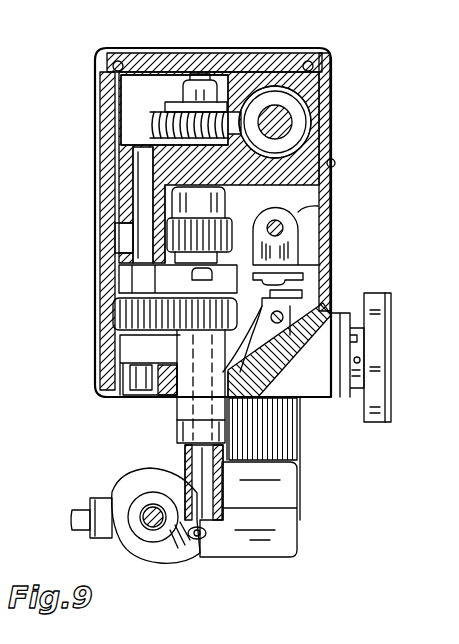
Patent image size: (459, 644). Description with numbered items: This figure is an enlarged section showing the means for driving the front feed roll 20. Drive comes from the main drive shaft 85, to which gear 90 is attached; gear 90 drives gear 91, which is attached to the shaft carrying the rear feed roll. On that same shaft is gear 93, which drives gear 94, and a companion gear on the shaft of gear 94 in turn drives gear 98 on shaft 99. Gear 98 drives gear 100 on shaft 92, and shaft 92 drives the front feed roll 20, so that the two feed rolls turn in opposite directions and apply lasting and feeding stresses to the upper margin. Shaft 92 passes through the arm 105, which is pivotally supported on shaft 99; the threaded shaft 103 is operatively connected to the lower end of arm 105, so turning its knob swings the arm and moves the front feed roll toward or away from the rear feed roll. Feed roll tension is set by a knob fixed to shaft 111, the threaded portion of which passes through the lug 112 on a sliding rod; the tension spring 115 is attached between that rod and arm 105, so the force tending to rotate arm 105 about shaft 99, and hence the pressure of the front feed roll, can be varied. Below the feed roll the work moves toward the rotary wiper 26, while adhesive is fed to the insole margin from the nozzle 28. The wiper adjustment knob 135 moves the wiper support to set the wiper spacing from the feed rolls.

The gear 91 is at (147, 123).
The gear 90 is at (300, 113).
The main drive shaft 85 is at (290, 125).
The shaft 99 is at (140, 195).
The gear 94 is at (117, 238).
The gear 93 is at (216, 223).
The arm 105 is at (128, 285).
The shaft 111 is at (288, 230).
The lug 112 is at (307, 207).
The tension spring 115 is at (298, 285).
The gear 98 is at (120, 315).
The gear 100 is at (180, 335).
The shaft 92 is at (190, 395).
The threaded shaft 103 is at (290, 338).
The wiper adjustment knob 135 is at (380, 325).
The front feed roll 20 is at (227, 533).
The rotary wiper 26 is at (140, 508).
The nozzle 28 is at (205, 545).